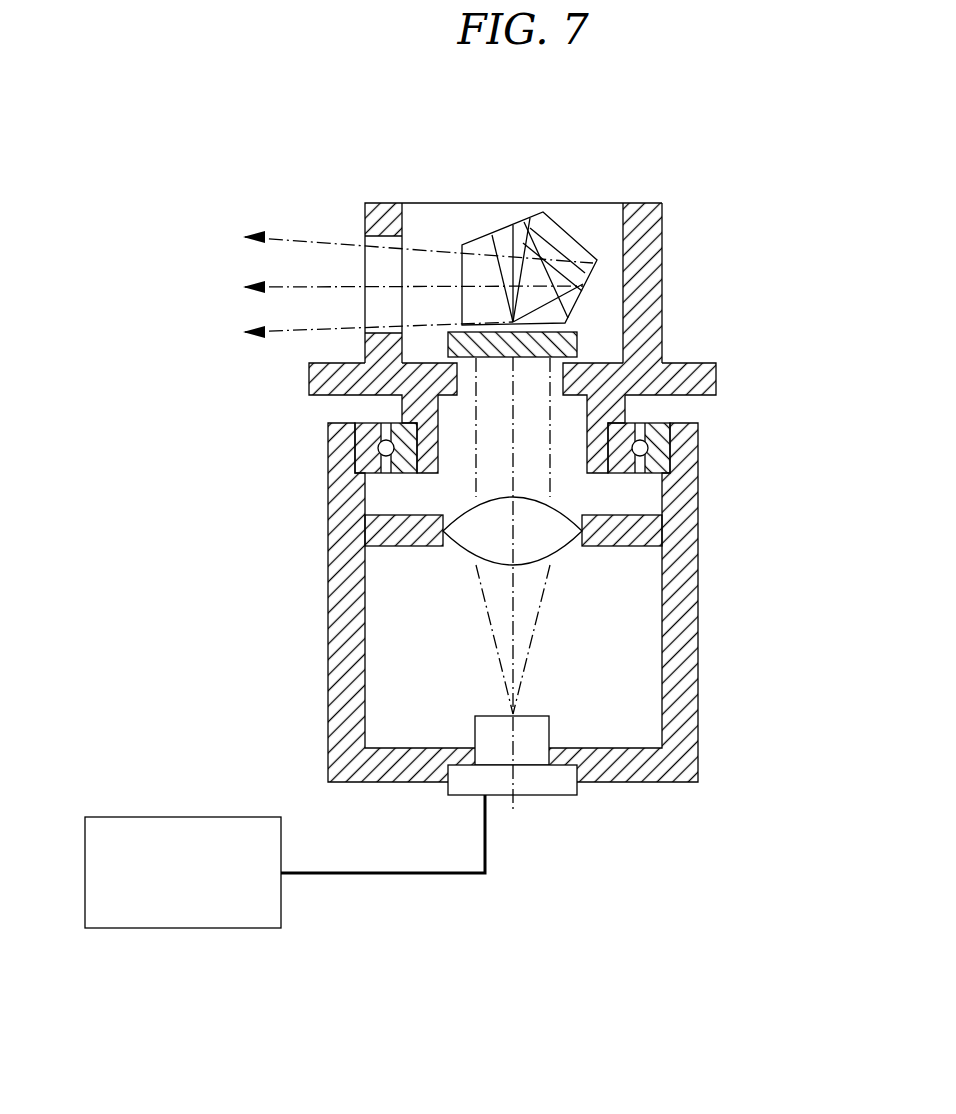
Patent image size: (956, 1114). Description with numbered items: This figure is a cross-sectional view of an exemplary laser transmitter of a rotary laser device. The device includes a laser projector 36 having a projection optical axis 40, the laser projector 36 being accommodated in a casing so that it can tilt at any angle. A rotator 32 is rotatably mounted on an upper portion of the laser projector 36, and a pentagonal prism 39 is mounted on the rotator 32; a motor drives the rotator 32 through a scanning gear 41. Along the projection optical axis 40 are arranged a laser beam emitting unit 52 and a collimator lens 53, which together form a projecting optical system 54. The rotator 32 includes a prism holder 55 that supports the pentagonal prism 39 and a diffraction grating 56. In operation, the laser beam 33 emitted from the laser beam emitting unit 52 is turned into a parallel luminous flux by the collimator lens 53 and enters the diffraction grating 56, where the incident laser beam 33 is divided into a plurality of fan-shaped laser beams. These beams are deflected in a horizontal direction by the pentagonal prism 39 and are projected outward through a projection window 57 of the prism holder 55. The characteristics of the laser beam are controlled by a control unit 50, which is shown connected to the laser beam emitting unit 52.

The rotator 32 is at (475, 278).
The laser beam 33 is at (280, 228).
The laser projector 36 is at (705, 697).
The pentagonal prism 39 is at (563, 230).
The projection optical axis 40 is at (505, 475).
The scanning gear 41 is at (717, 378).
The control unit 50 is at (170, 817).
The laser beam emitting unit 52 is at (548, 797).
The collimator lens 53 is at (567, 553).
The projecting optical system 54 is at (473, 623).
The prism holder 55 is at (663, 303).
The diffraction grating 56 is at (567, 343).
The projection window 57 is at (372, 268).